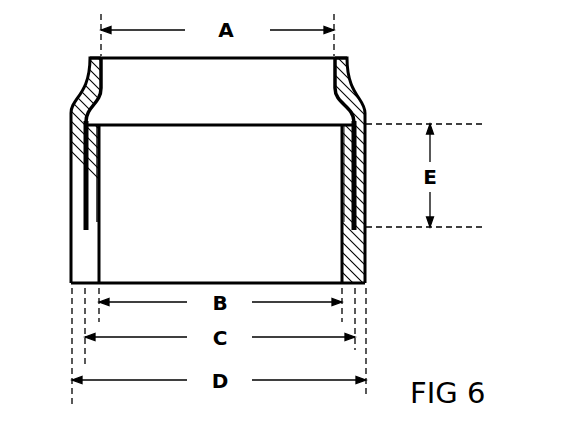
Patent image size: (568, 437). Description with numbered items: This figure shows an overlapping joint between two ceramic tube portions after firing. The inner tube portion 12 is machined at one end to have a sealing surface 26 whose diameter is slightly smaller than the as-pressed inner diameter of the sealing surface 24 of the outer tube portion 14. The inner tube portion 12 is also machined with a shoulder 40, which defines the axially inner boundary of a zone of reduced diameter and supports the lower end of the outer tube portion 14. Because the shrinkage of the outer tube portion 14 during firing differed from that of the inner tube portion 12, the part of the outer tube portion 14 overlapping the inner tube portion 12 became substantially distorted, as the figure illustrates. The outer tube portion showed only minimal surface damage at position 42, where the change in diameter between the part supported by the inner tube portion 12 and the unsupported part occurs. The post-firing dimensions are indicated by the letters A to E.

The inner tube portion 12 is at (345, 172).
The outer tube portion 14 is at (360, 140).
The sealing surface of the outer tube portion 24 is at (104, 182).
The sealing surface of the inner tube portion 26 is at (73, 163).
The shoulder 40 is at (76, 220).
The position of change in diameter 42 is at (384, 98).